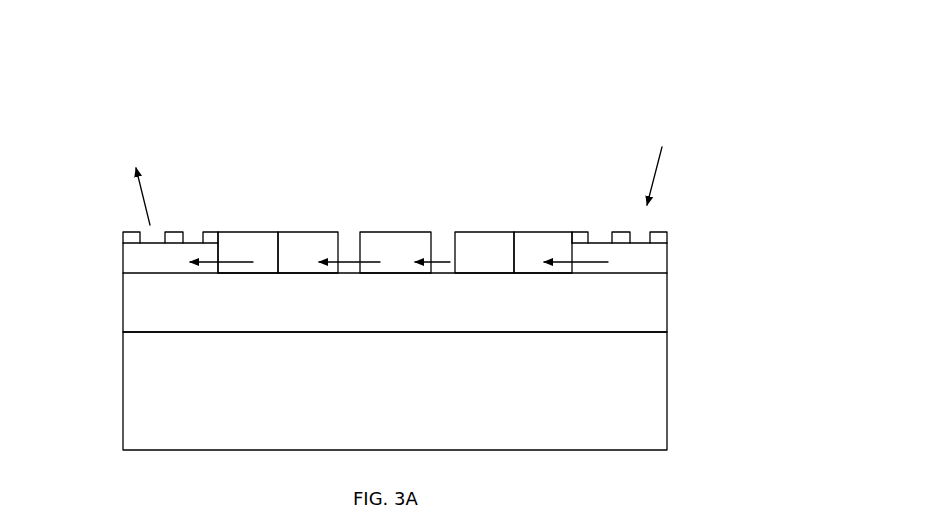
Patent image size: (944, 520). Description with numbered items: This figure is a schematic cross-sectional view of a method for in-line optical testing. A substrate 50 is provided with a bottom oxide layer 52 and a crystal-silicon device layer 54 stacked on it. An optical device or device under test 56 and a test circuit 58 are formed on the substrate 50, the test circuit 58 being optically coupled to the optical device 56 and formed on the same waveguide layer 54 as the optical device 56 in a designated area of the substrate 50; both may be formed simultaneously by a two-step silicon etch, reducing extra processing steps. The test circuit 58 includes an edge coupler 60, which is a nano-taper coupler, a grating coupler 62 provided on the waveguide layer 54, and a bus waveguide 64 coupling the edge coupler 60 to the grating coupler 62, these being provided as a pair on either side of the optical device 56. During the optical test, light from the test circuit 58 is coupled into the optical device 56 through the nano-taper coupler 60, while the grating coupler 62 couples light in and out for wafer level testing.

The substrate 50 is at (162, 393).
The bottom oxide layer 52 is at (148, 308).
The crystal-silicon device layer 54 is at (138, 258).
The optical device 56 is at (391, 245).
The test circuit 58 is at (546, 126).
The edge coupler 60 is at (308, 245).
The grating coupler 62 is at (205, 242).
The bus waveguide 64 is at (256, 245).